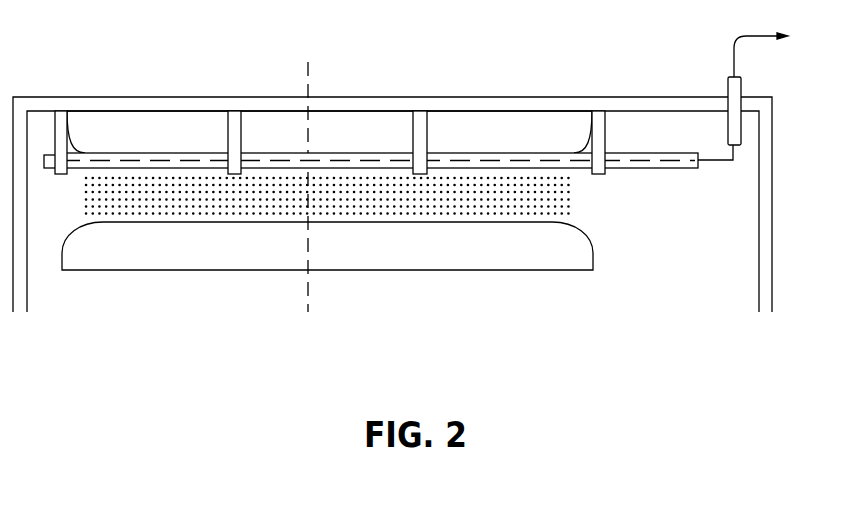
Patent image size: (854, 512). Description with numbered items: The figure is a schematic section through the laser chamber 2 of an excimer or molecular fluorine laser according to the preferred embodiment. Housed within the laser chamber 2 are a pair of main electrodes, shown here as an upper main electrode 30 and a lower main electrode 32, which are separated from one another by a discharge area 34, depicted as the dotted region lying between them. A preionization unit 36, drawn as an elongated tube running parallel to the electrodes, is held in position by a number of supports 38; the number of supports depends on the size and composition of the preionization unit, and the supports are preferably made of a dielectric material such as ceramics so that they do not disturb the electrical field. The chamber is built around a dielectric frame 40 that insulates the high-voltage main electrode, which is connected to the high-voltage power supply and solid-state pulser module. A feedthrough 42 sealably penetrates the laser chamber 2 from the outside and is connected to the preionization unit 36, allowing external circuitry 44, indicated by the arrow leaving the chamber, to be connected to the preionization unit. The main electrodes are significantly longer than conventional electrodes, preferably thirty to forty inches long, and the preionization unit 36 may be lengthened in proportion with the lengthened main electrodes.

The backlight housing 2 is at (153, 87).
The reflector 30 is at (356, 120).
The lens 32 is at (492, 257).
The diffuser dot pattern 34 is at (580, 205).
The lamp 36 is at (478, 142).
The lamp support 38 is at (49, 118).
The inner wall 40 is at (749, 280).
The connector 42 is at (721, 66).
The output lead 44 is at (778, 51).